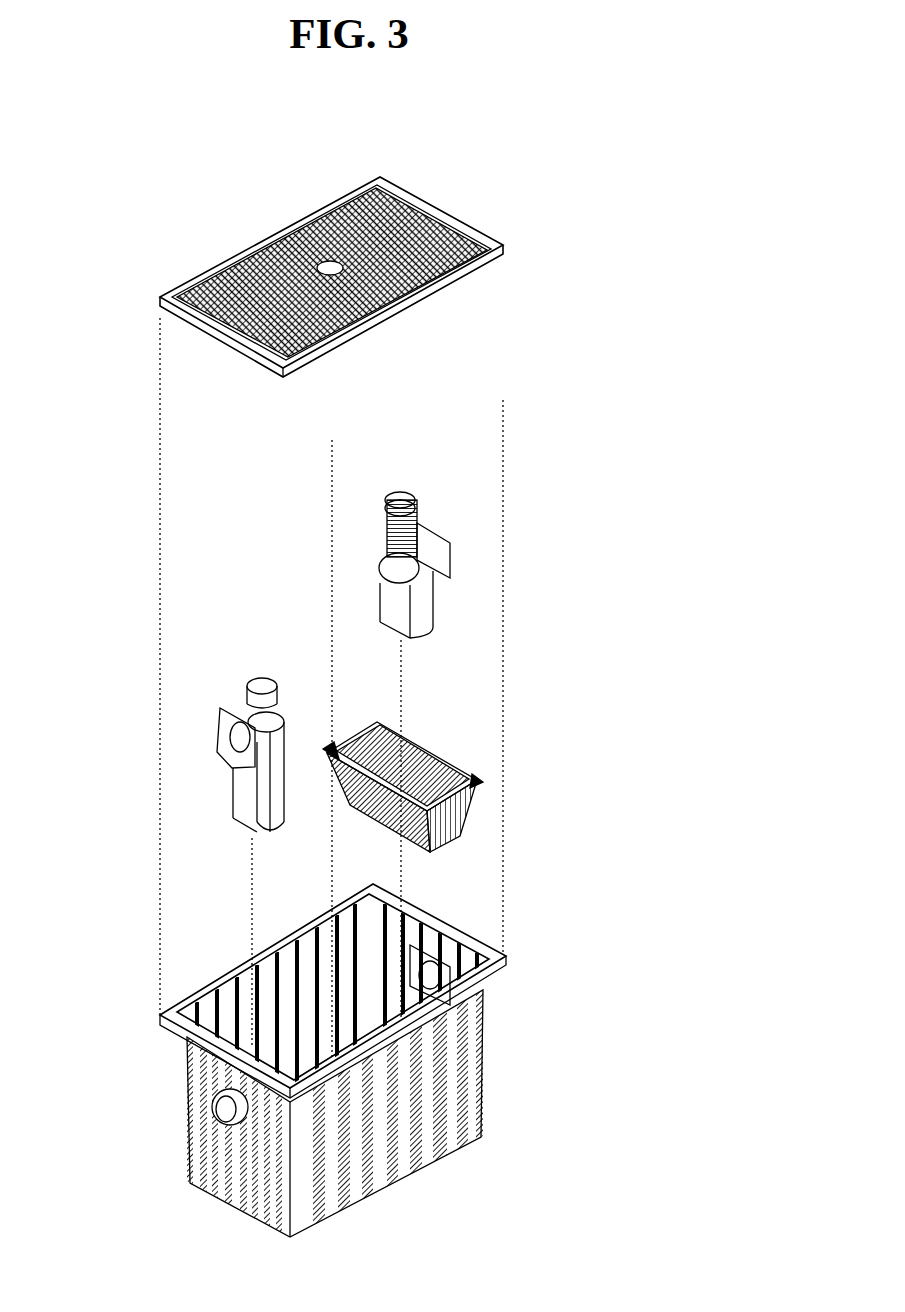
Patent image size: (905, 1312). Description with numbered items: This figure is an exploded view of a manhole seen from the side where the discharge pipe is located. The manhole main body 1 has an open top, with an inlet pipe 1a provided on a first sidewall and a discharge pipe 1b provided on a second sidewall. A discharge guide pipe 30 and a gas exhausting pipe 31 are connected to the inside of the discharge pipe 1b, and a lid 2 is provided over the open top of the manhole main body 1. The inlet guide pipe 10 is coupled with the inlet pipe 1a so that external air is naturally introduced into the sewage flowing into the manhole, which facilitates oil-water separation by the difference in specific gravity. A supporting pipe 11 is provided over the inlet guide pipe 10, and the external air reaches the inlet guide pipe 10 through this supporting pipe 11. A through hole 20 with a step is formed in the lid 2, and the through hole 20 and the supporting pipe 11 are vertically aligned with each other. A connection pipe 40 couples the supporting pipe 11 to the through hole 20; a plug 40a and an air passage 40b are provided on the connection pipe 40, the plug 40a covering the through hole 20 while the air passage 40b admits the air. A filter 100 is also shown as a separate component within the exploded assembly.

The manhole main body 1 is at (316, 1045).
The inlet pipe 1a is at (430, 950).
The discharge pipe 1b is at (203, 1113).
The lid 2 is at (445, 212).
The through hole 20 is at (417, 190).
The inlet guide pipe 10 is at (355, 466).
The supporting pipe 11 is at (390, 516).
The discharge guide pipe 30 is at (174, 748).
The gas exhausting pipe 31 is at (263, 678).
The connection pipe 40 is at (401, 490).
The plug 40a is at (403, 494).
The air passage 40b is at (420, 512).
The filter 100 is at (447, 757).